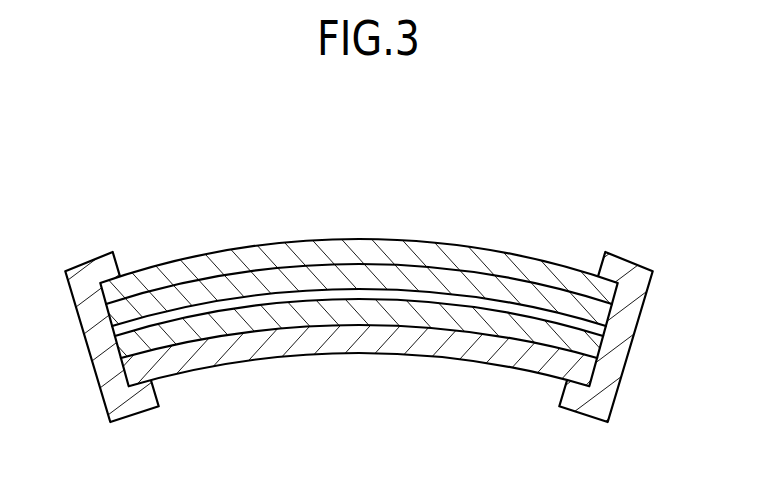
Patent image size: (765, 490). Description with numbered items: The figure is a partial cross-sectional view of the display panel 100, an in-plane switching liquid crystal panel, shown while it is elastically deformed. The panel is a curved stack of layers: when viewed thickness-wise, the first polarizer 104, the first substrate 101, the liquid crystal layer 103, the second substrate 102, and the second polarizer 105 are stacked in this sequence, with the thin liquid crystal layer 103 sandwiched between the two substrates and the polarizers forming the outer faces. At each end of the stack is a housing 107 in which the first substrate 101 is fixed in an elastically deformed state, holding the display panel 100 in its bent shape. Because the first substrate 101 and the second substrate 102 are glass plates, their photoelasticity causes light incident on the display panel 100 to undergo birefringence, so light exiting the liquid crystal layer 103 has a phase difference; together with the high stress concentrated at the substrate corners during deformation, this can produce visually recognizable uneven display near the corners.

The display panel 100 is at (286, 185).
The first substrate 101 is at (597, 317).
The second substrate 102 is at (590, 355).
The liquid crystal layer 103 is at (598, 335).
The first polarizer 104 is at (525, 262).
The second polarizer 105 is at (517, 355).
The housing 107 is at (119, 400).